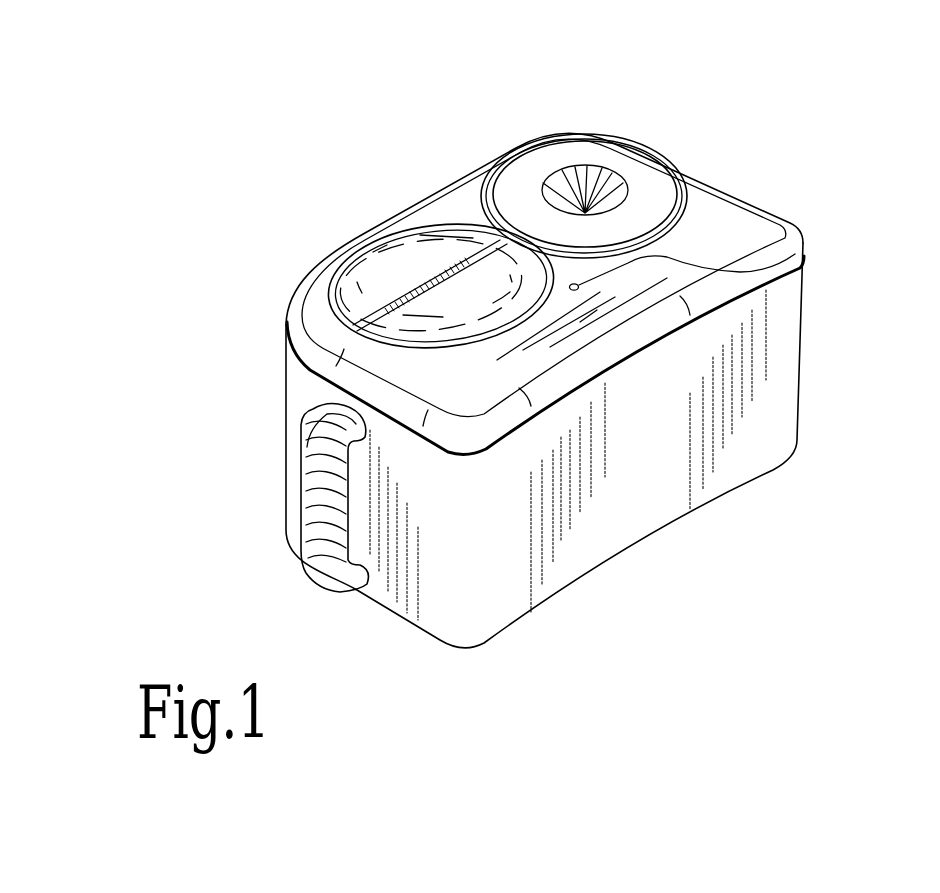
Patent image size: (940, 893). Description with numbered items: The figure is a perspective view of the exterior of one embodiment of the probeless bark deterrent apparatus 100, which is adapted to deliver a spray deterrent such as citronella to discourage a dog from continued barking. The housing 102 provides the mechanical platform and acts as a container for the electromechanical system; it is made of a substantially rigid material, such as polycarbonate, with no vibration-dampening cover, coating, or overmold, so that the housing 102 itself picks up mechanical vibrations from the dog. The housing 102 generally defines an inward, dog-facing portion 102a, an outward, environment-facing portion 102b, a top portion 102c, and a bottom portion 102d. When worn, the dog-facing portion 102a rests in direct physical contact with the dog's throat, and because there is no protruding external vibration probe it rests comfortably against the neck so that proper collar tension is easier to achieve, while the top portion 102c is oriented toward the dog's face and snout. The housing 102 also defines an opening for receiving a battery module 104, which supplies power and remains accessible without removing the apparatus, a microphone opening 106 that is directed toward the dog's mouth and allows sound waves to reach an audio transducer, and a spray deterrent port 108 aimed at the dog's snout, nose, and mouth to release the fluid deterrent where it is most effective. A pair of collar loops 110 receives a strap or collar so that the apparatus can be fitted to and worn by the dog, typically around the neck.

The probeless bark deterrent apparatus 100 is at (235, 240).
The housing 102 is at (777, 417).
The inward (dog-facing) portion 102a is at (641, 484).
The outward (environment-facing) portion 102b is at (374, 217).
The top portion 102c is at (446, 205).
The bottom portion 102d is at (422, 632).
The battery module 104 is at (407, 253).
The microphone opening 106 is at (795, 254).
The spray deterrent port 108 is at (557, 157).
The collar loops 110 is at (301, 506).